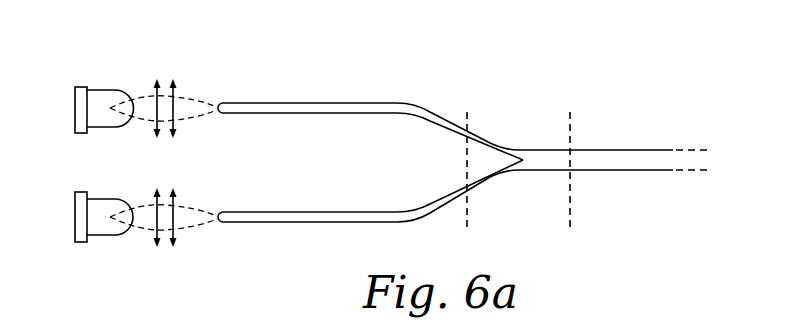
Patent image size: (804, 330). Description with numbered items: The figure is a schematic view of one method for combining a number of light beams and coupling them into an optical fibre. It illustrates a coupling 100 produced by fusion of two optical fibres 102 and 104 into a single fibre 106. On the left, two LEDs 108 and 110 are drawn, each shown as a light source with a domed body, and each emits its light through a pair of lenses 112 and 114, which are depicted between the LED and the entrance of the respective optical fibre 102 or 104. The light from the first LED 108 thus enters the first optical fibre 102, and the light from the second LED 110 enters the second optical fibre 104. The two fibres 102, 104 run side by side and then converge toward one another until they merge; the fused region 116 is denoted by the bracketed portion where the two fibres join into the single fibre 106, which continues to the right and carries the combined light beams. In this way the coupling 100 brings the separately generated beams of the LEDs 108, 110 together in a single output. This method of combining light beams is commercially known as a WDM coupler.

The coupling 100 is at (460, 51).
The optical fibre 102 is at (310, 104).
The optical fibre 104 is at (295, 219).
The single fibre 106 is at (621, 148).
The LED 108 is at (110, 93).
The LED 110 is at (100, 226).
The lens 112 is at (175, 112).
The lens 114 is at (157, 115).
The fused region 116 is at (467, 112).